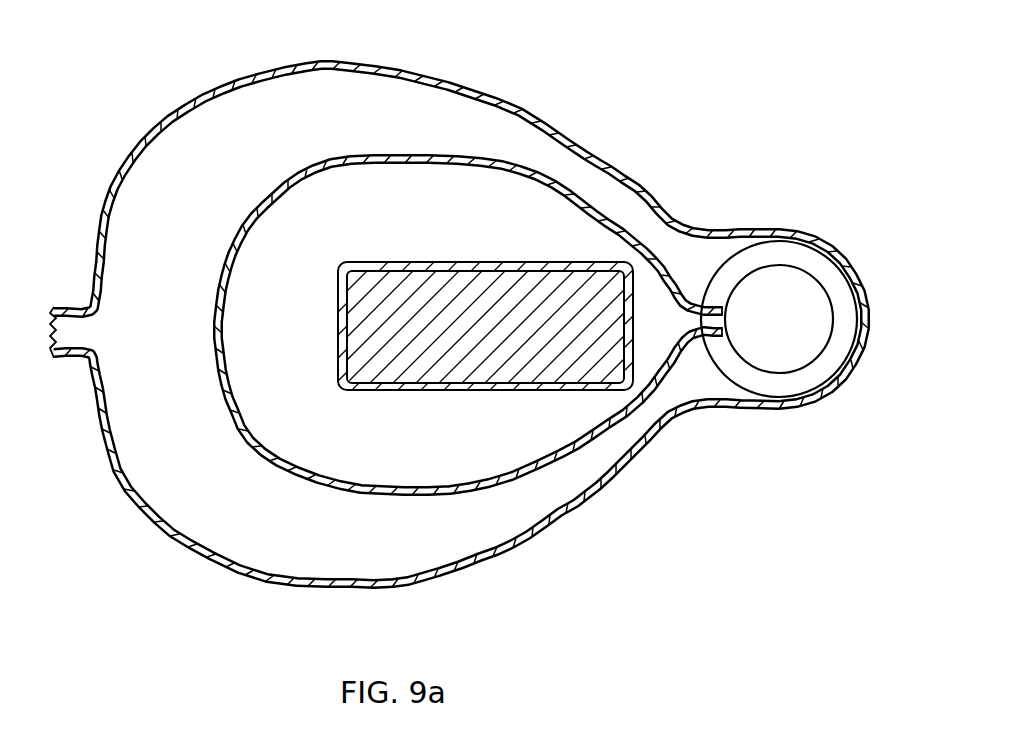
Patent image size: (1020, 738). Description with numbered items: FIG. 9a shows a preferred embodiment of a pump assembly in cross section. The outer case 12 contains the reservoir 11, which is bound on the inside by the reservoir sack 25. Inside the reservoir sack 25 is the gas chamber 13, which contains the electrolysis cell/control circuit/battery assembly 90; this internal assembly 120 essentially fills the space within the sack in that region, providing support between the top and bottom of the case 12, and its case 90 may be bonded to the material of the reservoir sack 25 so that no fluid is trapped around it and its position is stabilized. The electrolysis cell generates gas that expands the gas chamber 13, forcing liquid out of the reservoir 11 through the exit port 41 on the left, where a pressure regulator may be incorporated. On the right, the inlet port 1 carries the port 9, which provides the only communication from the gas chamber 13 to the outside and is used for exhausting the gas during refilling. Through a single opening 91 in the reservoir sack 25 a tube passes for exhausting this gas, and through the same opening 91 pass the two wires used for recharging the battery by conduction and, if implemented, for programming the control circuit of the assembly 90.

The inlet port 1 is at (807, 354).
The port 9 is at (723, 322).
The reservoir 11 is at (461, 349).
The outer case 12 is at (415, 577).
The gas chamber 13 is at (468, 324).
The reservoir sack 25 is at (327, 160).
The exit port 41 is at (92, 333).
The electrolysis cell/control circuit/battery assembly 90 is at (338, 329).
The opening 91 is at (693, 322).
The assembly 120 is at (514, 424).